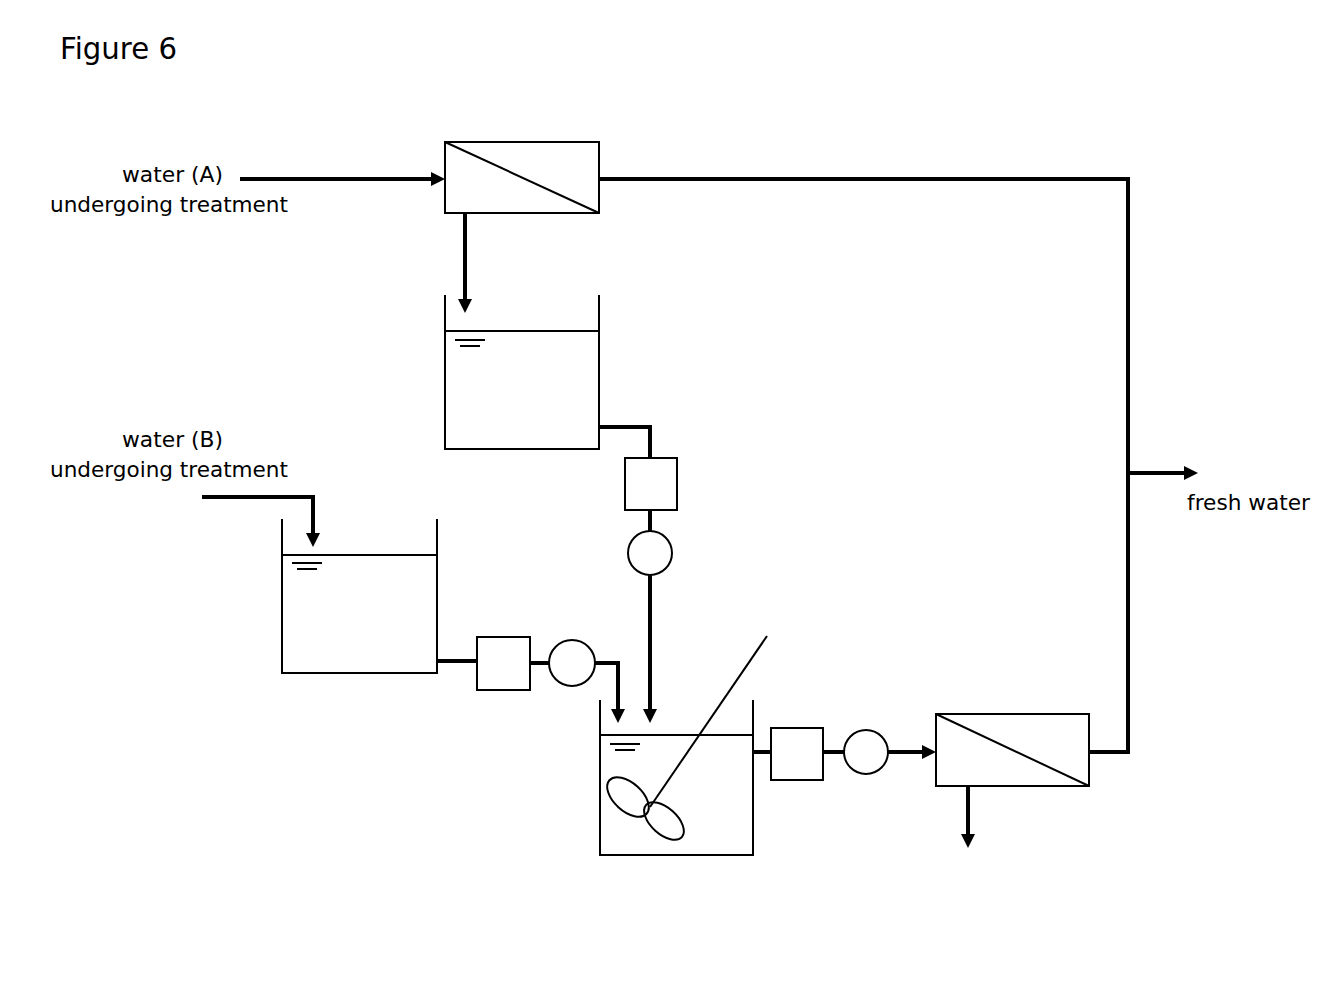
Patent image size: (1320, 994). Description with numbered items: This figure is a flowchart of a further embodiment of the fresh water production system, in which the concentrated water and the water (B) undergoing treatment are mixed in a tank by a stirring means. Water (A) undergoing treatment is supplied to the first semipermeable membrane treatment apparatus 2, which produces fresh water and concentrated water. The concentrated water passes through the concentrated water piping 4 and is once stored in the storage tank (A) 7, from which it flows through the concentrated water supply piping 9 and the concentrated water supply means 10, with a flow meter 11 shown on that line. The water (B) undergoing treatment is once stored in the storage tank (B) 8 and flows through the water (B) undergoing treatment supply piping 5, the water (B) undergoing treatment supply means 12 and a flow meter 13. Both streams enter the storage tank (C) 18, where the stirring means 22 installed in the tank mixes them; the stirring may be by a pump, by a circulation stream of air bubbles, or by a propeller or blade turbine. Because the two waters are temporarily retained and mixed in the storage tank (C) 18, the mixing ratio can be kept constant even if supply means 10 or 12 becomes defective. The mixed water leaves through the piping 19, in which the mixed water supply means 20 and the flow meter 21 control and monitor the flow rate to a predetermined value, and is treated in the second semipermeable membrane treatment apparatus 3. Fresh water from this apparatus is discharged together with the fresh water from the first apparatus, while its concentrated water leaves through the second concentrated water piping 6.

The first semipermeable membrane treatment apparatus 2 is at (614, 146).
The second semipermeable membrane treatment apparatus 3 is at (1104, 795).
The concentrated water piping 4 is at (443, 264).
The water (B) undergoing treatment supply piping 5 is at (466, 684).
The second concentrated water piping 6 is at (945, 831).
The storage tank (A) 7 is at (611, 346).
The storage tank (B) 8 is at (292, 694).
The concentrated water supply piping 9 is at (667, 429).
The concentrated water supply means 10 is at (690, 476).
The flow meter 11 is at (691, 541).
The water (B) undergoing treatment supply means 12 is at (513, 624).
The flow meter 13 is at (567, 625).
The storage tank (C) 18 is at (589, 836).
The piping 19 is at (904, 736).
The mixed water supply means 20 is at (804, 716).
The flow meter 21 is at (847, 791).
The stirring means 22 is at (779, 618).